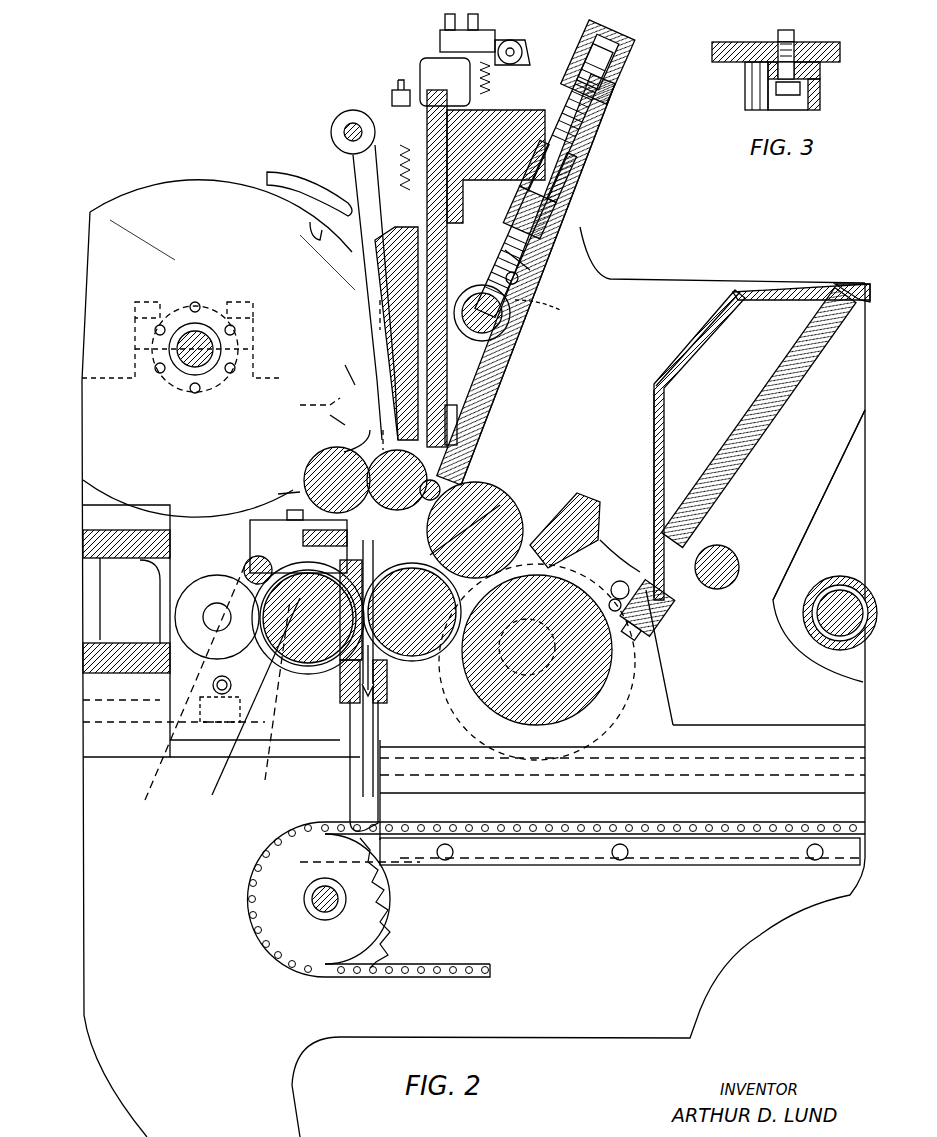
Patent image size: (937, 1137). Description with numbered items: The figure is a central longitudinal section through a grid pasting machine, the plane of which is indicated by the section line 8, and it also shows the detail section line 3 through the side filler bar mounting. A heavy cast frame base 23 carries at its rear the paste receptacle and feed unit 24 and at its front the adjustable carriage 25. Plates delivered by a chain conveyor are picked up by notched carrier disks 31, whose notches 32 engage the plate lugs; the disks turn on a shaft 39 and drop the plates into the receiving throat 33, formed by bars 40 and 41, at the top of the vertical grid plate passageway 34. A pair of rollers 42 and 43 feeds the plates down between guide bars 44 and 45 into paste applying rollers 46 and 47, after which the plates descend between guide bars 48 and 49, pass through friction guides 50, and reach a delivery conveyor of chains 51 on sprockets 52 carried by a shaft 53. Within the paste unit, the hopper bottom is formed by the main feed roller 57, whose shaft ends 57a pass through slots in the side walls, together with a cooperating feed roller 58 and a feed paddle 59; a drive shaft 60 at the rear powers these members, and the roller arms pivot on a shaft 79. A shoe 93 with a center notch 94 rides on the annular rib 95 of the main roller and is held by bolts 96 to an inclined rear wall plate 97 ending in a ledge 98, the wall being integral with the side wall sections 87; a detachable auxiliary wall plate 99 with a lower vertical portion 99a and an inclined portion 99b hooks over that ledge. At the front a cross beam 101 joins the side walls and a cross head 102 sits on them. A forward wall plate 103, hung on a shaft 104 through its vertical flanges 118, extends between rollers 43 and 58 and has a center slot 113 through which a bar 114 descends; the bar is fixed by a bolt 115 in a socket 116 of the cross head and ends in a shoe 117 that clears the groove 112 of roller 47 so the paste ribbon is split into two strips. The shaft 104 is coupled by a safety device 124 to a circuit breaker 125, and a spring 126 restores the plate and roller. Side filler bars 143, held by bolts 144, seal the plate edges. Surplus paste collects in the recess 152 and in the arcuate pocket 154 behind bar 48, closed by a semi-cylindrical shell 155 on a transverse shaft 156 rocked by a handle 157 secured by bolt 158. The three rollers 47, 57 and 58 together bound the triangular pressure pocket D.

In FIG. 2, the section line 3— 3 is at (463, 270).
In FIG. 2, the section line 8— 8 is at (237, 628).
In FIG. 2, the frame base 23 is at (718, 1012).
In FIG. 2, the paste receptacle and feed unit 24 is at (704, 276).
In FIG. 3, the paste receptacle and feed unit 24 is at (842, 52).
In FIG. 2, the carriage 25 is at (204, 752).
In FIG. 2, the carrier disks 31 is at (135, 200).
In FIG. 2, the notches 32 is at (185, 176).
In FIG. 2, the receiving throat 33 is at (340, 380).
In FIG. 2, the vertical grid plate passageway 34 is at (345, 452).
In FIG. 2, the shaft 39 is at (180, 370).
In FIG. 2, the bar 40 is at (340, 422).
In FIG. 2, the bar 41 is at (330, 408).
In FIG. 2, the roller 42 is at (305, 470).
In FIG. 2, the roller 43 is at (430, 478).
In FIG. 2, the guide bar 44 is at (290, 492).
In FIG. 2, the guide bar 45 is at (440, 488).
In FIG. 2, the paste applying roller 46 is at (247, 704).
In FIG. 2, the paste applying roller 47 is at (410, 680).
In FIG. 2, the guide bar 48 is at (320, 680).
In FIG. 2, the guide bar 49 is at (384, 705).
In FIG. 2, the friction guides 50 is at (355, 745).
In FIG. 2, the chains 51 is at (500, 828).
In FIG. 2, the sprockets 52 is at (385, 905).
In FIG. 2, the shaft 53 is at (324, 912).
In FIG. 2, the main feed roller 57 is at (580, 696).
In FIG. 2, the shaft ends 57a is at (520, 660).
In FIG. 2, the feed roller 58 is at (540, 520).
In FIG. 2, the feed paddle 59 is at (566, 500).
In FIG. 2, the drive shaft 60 is at (835, 635).
In FIG. 2, the shaft 79 is at (742, 556).
In FIG. 2, the side wall sections 87 is at (828, 348).
In FIG. 2, the shoe 93 is at (620, 580).
In FIG. 2, the center notch 94 is at (612, 598).
In FIG. 2, the annular rib 95 is at (590, 578).
In FIG. 2, the bolts 96 is at (672, 628).
In FIG. 2, the rear wall plate 97 is at (733, 457).
In FIG. 2, the ledge extension 98 is at (855, 283).
In FIG. 2, the auxiliary wall plate 99 is at (694, 331).
In FIG. 2, the lower vertical portion 99a is at (653, 437).
In FIG. 2, the intermediate inclined portion 99b is at (672, 368).
In FIG. 2, the cross beam 101 is at (435, 330).
In FIG. 2, the cross head 102 is at (455, 112).
In FIG. 2, the forward wall forming plate 103 is at (490, 360).
In FIG. 3, the forward wall forming plate 103 is at (820, 108).
In FIG. 2, the shaft 104 is at (470, 295).
In FIG. 3, the shaft 104 is at (750, 78).
In FIG. 2, the groove 112 is at (453, 506).
In FIG. 2, the center slot 113 is at (455, 415).
In FIG. 2, the bar 114 is at (430, 292).
In FIG. 2, the bolt 115 is at (400, 128).
In FIG. 2, the socket 116 is at (395, 88).
In FIG. 2, the shoe 117 is at (466, 519).
In FIG. 2, the vertical flanges 118 is at (495, 405).
In FIG. 3, the vertical flanges 118 is at (758, 104).
In FIG. 2, the safety device 124 is at (615, 72).
In FIG. 2, the circuit breaker 125 is at (480, 25).
In FIG. 2, the spring 126 is at (540, 208).
In FIG. 2, the side filler bars 143 is at (545, 273).
In FIG. 3, the side filler bars 143 is at (822, 72).
In FIG. 2, the bolts 144 is at (540, 268).
In FIG. 3, the bolts 144 is at (792, 44).
In FIG. 2, the recess 152 is at (315, 560).
In FIG. 2, the arcuate pocket 154 is at (232, 680).
In FIG. 2, the semi-cylindrical shell 155 is at (355, 660).
In FIG. 2, the transverse shaft 156 is at (250, 565).
In FIG. 2, the handle 157 is at (187, 695).
In FIG. 2, the bolt 158 is at (210, 682).
In FIG. 2, the pressure pocket D is at (471, 591).